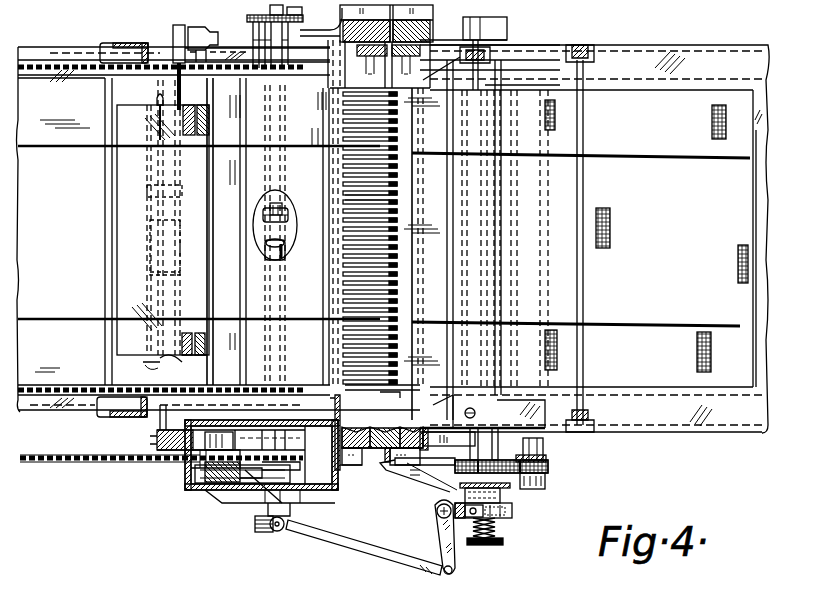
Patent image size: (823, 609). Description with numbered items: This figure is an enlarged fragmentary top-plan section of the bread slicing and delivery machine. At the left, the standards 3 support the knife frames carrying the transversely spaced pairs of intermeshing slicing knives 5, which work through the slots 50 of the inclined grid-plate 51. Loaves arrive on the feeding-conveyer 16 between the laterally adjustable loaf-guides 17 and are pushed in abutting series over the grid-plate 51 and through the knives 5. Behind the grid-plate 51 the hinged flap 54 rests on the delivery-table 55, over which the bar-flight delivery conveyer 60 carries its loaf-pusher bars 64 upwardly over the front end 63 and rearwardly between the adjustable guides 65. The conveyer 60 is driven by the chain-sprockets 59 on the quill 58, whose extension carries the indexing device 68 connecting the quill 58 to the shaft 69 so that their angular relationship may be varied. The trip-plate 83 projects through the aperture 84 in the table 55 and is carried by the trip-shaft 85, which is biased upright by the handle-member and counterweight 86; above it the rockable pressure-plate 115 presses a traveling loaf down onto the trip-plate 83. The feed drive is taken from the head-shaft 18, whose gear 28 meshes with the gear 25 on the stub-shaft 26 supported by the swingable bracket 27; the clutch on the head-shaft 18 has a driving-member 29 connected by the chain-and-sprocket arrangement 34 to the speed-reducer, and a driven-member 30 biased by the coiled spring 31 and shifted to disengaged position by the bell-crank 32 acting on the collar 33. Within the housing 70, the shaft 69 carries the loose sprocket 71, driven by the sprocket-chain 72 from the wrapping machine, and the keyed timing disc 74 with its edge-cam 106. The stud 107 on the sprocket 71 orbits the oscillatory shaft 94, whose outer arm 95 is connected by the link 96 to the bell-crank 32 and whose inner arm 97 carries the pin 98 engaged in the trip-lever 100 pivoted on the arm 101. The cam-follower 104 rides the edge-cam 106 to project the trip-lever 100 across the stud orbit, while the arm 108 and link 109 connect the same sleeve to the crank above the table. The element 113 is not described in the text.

The standards 3 is at (370, 460).
The slicing knives 5 is at (392, 137).
The feeding-conveyer 16 is at (594, 239).
The loaf-guides 17 is at (604, 160).
The head-shaft 18 is at (490, 292).
The gear 25 is at (550, 468).
The stub-shaft 26 is at (545, 445).
The bracket 27 is at (545, 483).
The gear 28 is at (455, 470).
The driving-member 29 is at (512, 503).
The driven-member 30 is at (506, 506).
The coiled spring 31 is at (498, 532).
The bell-crank 32 is at (460, 562).
The collar 33 is at (500, 520).
The chain-and-sprocket arrangement 34 is at (512, 497).
The slots 50 is at (343, 200).
The grid-plate 51 is at (366, 240).
The flap 54 is at (277, 231).
The delivery-table 55 is at (174, 229).
The quill 58 is at (288, 242).
The chain-sprockets 59 is at (300, 390).
The delivery conveyer 60 is at (82, 45).
The front end 63 is at (290, 208).
The loaf-pusher bars 64 is at (105, 205).
The guides 65 is at (78, 167).
The indexing device 68 is at (252, 16).
The shaft 69 is at (265, 215).
The housing 70 is at (340, 483).
The sprocket 71 is at (310, 450).
The sprocket-chain 72 is at (144, 464).
The timing disc 74 is at (302, 438).
The trip-plate 83 is at (160, 236).
The aperture 84 is at (155, 195).
The trip-shaft 85 is at (178, 27).
The handle-member and counterweight 86 is at (203, 27).
The oscillatory shaft 94 is at (276, 531).
The arm 95 is at (256, 527).
The link 96 is at (362, 552).
The arm 97 is at (262, 490).
The pin 98 is at (222, 490).
The trip-lever 100 is at (205, 482).
The arm 101 is at (195, 480).
The cam-follower 104 is at (222, 444).
The edge-cam 106 is at (330, 405).
The stud 107 is at (282, 504).
The arm 108 is at (186, 460).
The link 109 is at (152, 438).
The bracket 113 is at (433, 29).
The pressure-plate 115 is at (212, 362).